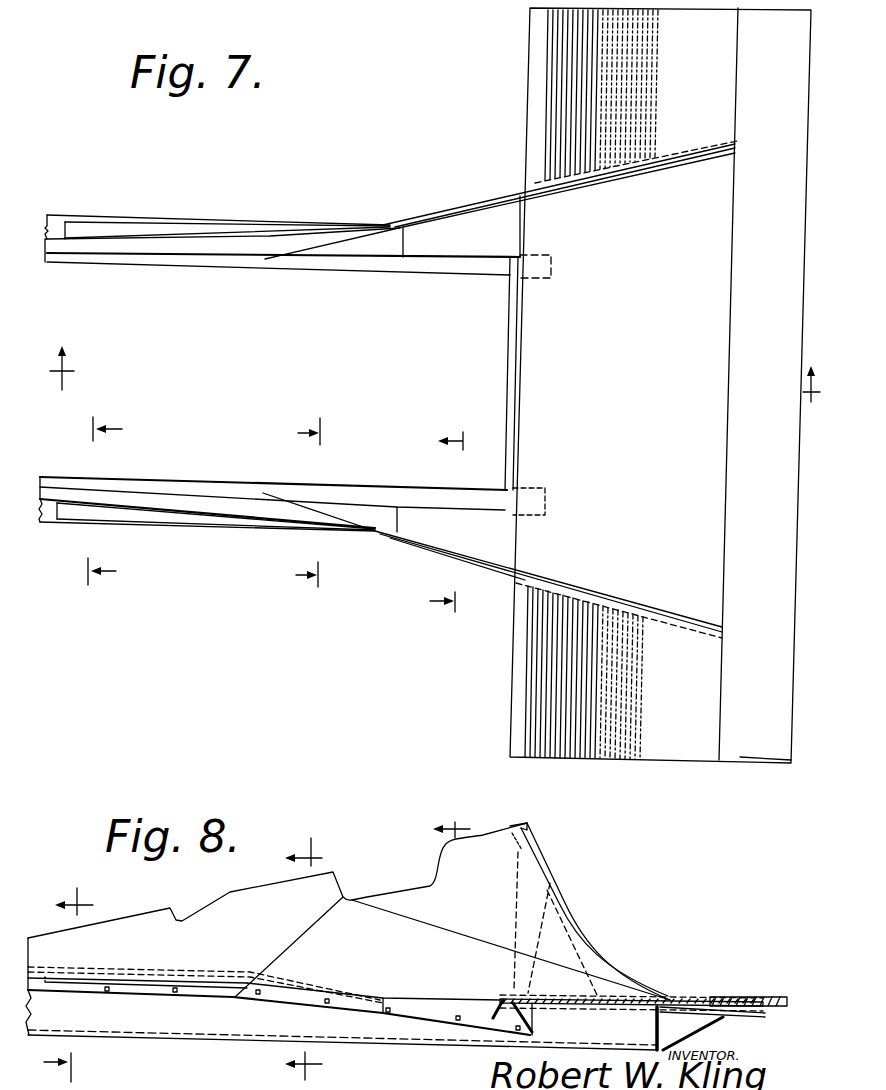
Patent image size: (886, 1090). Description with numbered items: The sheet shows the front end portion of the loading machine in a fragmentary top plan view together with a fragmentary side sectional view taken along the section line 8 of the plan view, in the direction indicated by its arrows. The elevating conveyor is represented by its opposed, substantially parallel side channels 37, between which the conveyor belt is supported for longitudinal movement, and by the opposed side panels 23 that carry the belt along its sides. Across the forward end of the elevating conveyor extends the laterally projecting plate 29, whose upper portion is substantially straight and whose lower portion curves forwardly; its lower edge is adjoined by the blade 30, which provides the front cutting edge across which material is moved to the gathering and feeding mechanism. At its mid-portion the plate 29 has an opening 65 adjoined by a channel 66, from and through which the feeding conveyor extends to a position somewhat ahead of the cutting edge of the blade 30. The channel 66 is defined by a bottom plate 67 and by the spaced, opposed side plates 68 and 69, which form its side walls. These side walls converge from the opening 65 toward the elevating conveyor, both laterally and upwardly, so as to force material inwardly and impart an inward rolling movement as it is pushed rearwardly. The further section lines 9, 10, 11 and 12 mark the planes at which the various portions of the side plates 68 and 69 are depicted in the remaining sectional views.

In FIG. 7, the section line 8— 8 is at (435, 392).
In FIG. 8, the section line 9— 9 is at (410, 860).
In FIG. 7, the section line 10— 10 is at (434, 522).
In FIG. 8, the section line 10— 10 is at (457, 818).
In FIG. 7, the section line 11— 11 is at (333, 504).
In FIG. 8, the section line 11— 11 is at (300, 962).
In FIG. 7, the section line 12— 12 is at (127, 502).
In FIG. 8, the section line 12— 12 is at (85, 984).
In FIG. 7, the side panels 23 is at (147, 238).
In FIG. 7, the plate 29 is at (528, 53).
In FIG. 8, the plate 29 is at (585, 932).
In FIG. 7, the blade 30 is at (745, 758).
In FIG. 8, the blade 30 is at (733, 1003).
In FIG. 7, the side channels 37 is at (355, 267).
In FIG. 7, the opening 65 is at (668, 158).
In FIG. 7, the channel 66 is at (705, 280).
In FIG. 8, the channel 66 is at (522, 886).
In FIG. 7, the bottom plate 67 is at (541, 213).
In FIG. 8, the bottom plate 67 is at (600, 1001).
In FIG. 7, the side plate 68 is at (418, 548).
In FIG. 7, the side plate 69 is at (472, 197).
In FIG. 8, the side plate 69 is at (483, 845).